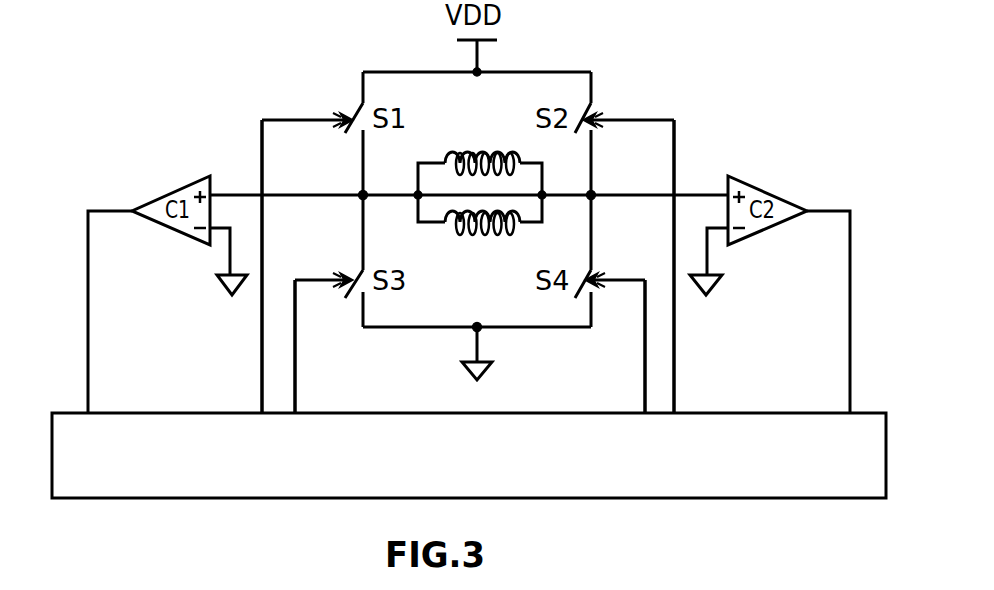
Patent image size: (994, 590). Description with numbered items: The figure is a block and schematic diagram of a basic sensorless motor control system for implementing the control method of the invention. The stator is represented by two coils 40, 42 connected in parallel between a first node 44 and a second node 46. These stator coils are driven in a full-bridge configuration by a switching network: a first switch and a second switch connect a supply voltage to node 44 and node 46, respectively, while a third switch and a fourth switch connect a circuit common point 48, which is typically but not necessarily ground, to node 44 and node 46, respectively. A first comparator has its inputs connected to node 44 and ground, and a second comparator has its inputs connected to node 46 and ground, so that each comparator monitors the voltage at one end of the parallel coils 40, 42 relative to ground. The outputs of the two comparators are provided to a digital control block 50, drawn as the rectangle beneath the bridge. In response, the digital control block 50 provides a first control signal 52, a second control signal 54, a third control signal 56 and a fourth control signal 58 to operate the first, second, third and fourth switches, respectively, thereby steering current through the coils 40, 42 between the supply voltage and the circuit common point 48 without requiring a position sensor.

The coil 40 is at (477, 147).
The coil 42 is at (481, 241).
The node 44 is at (361, 199).
The node 46 is at (593, 198).
The circuit common point 48 is at (476, 324).
The digital control block 50 is at (577, 412).
The control signal 52 is at (260, 373).
The control signal 54 is at (675, 353).
The control signal 56 is at (295, 333).
The control signal 58 is at (643, 378).